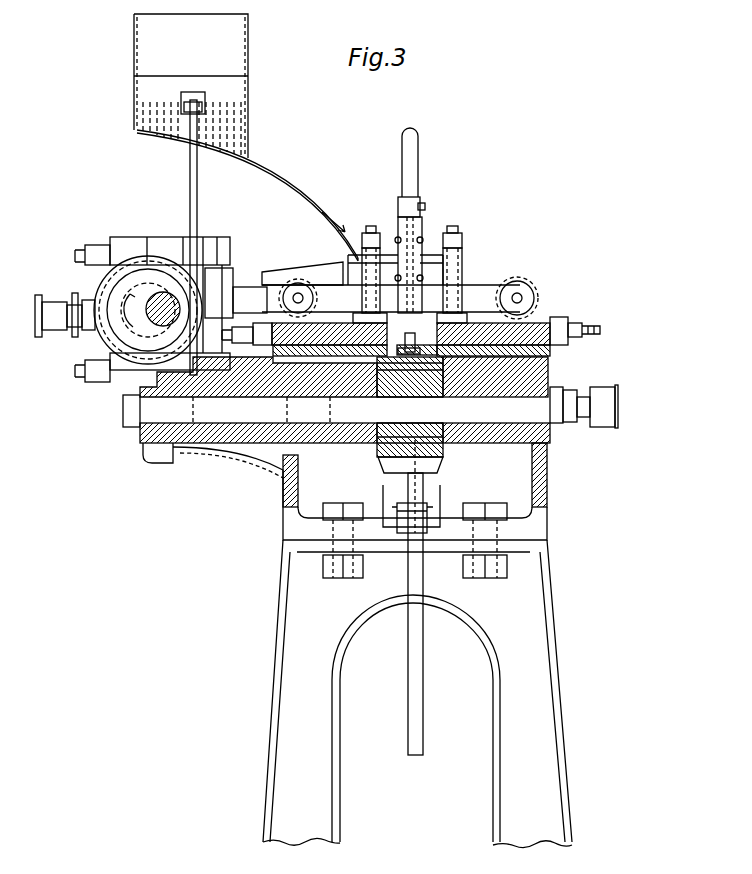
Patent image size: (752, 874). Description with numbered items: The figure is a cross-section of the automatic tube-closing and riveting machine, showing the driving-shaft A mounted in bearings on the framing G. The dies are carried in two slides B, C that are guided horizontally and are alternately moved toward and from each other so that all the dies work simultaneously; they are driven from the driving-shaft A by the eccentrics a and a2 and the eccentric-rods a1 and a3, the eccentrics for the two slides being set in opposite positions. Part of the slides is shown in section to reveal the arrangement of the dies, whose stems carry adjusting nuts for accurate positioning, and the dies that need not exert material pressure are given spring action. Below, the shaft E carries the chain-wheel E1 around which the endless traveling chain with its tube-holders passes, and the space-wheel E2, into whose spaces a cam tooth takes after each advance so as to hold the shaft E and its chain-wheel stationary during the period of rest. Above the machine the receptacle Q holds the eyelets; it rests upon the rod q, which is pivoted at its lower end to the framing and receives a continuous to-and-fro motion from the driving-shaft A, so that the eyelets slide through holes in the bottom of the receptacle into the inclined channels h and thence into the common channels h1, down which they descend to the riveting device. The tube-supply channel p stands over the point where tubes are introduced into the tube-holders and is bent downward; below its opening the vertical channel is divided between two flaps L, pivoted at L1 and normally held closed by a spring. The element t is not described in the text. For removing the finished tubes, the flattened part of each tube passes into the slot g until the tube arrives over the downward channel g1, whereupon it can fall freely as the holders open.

The receptacle Q is at (142, 50).
The inclined channels h is at (240, 136).
The common channels h1 is at (279, 188).
The rod q is at (190, 171).
The eccentrics a is at (120, 262).
The driving-shaft A is at (143, 320).
The eccentric-rods a1 is at (246, 296).
The eccentrics a2 is at (215, 276).
The eccentric-rods a3 is at (278, 278).
The flaps L is at (400, 287).
The flap pivots L1 is at (370, 233).
The channel p is at (412, 234).
The pin t is at (415, 321).
The slide B is at (386, 339).
The slide C is at (534, 318).
The shaft E is at (370, 432).
The chain-wheel E1 is at (439, 441).
The space-wheel E2 is at (147, 441).
The framing G is at (417, 645).
The slot g is at (428, 479).
The channel g1 is at (422, 655).